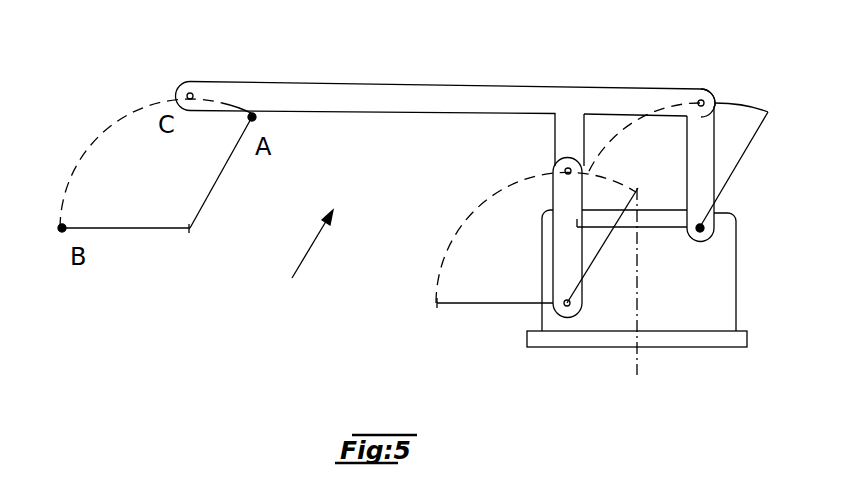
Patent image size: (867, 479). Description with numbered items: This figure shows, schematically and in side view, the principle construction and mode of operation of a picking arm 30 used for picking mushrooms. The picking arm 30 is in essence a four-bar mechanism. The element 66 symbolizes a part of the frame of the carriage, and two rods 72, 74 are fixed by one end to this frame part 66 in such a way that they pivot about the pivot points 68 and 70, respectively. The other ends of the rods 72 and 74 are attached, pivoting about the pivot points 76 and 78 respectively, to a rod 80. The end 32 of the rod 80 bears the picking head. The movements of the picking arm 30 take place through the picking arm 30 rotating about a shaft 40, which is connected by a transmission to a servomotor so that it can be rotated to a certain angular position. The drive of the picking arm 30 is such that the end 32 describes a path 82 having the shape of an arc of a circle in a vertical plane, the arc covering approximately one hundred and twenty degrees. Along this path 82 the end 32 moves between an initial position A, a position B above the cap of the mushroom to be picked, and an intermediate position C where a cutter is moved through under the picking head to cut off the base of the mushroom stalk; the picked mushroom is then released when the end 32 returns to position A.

The picking arm 30 is at (296, 268).
The end of the picking arm 32 is at (193, 68).
The shaft 40 is at (662, 293).
The frame part 66 is at (670, 278).
The pivot point 68 is at (562, 306).
The pivot point 70 is at (704, 229).
The rod 72 is at (537, 238).
The rod 74 is at (750, 174).
The pivot point 76 is at (521, 157).
The pivot point 78 is at (678, 101).
The rod 80 is at (445, 96).
The path 82 is at (140, 124).